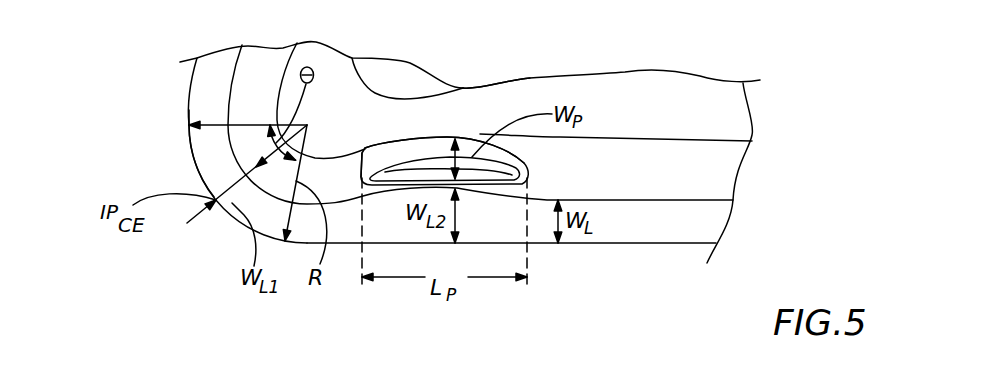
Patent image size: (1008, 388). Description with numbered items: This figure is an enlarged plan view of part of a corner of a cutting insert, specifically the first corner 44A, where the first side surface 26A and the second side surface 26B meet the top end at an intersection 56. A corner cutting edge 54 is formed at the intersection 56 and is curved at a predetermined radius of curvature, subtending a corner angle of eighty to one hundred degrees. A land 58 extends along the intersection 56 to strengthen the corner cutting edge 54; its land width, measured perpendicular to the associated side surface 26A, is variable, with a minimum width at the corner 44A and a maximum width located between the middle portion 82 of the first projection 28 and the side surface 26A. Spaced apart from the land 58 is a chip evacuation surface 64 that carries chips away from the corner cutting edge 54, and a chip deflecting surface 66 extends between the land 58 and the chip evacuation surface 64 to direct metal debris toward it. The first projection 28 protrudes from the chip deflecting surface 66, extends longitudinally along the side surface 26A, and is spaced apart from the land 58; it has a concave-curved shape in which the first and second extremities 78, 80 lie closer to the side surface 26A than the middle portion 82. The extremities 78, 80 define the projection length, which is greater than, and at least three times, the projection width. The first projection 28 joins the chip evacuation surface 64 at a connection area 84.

The first side surface 26A is at (607, 243).
The second side surface 26B is at (192, 93).
The first projection 28 is at (480, 133).
The first corner 44A is at (191, 240).
The corner cutting edge 54 is at (168, 136).
The intersection 56 is at (168, 136).
The land 58 is at (698, 220).
The chip evacuation surface 64 is at (717, 115).
The chip deflecting surface 66 is at (708, 172).
The first extremity 78 is at (521, 166).
The second extremity 80 is at (369, 173).
The middle portion 82 is at (435, 162).
The connection area 84 is at (400, 138).